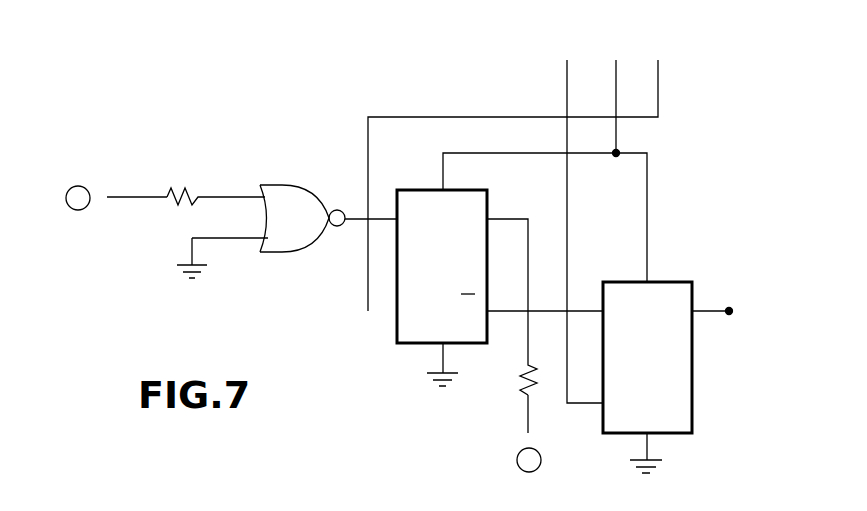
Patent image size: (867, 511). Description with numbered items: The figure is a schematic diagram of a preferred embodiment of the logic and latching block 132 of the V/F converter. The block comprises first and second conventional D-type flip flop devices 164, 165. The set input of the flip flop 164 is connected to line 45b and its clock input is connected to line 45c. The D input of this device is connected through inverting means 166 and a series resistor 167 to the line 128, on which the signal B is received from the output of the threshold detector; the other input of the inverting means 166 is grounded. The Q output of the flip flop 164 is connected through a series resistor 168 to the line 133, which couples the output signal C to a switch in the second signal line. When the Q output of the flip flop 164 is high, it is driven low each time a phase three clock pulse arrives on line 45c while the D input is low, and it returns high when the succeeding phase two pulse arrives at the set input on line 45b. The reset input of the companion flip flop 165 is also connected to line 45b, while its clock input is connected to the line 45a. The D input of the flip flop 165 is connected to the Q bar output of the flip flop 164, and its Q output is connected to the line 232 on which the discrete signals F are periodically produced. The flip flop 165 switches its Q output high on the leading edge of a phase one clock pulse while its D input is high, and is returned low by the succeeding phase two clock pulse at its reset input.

The line 128 is at (132, 200).
The series resistor 167 is at (197, 172).
The inverting means 166 is at (300, 183).
The line 45c is at (417, 99).
The line 45b is at (617, 138).
The line 45a is at (568, 218).
The flip flop 164 is at (396, 327).
The logic and latching block 132 is at (378, 397).
The series resistor 168 is at (517, 390).
The line 133 is at (533, 422).
The flip flop 165 is at (697, 378).
The line 232 is at (713, 305).